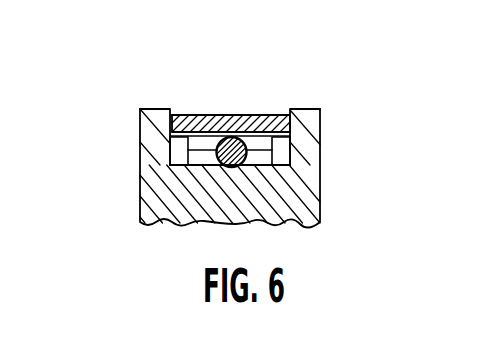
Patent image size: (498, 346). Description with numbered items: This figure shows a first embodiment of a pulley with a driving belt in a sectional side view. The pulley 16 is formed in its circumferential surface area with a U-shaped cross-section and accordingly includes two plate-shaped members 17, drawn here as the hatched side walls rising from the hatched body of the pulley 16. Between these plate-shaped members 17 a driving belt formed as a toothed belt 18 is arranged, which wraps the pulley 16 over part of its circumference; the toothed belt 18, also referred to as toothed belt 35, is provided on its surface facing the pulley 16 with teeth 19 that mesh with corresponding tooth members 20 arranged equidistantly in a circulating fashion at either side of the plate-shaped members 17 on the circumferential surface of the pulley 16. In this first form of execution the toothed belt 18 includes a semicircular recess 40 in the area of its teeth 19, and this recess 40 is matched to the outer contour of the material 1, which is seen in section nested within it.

The material 1 is at (219, 159).
The pulley 16 is at (283, 221).
The plate-shaped members 17 is at (140, 115).
The toothed belt 18 is at (272, 114).
The teeth 19 is at (195, 138).
The tooth members 20 is at (176, 150).
The toothed belt 35 is at (177, 114).
The semicircular recess 40 is at (245, 137).